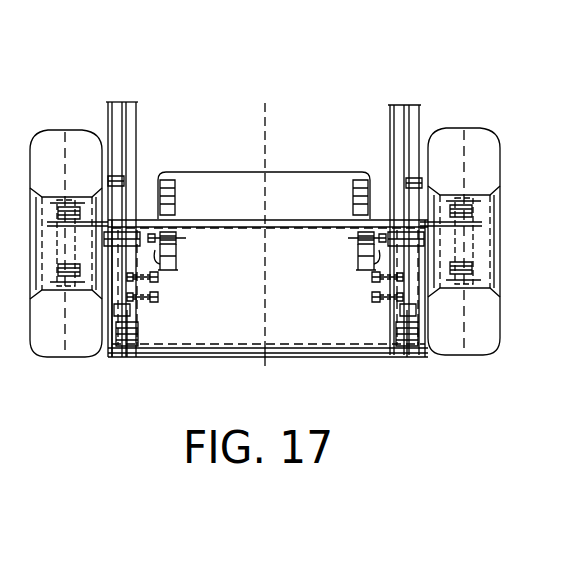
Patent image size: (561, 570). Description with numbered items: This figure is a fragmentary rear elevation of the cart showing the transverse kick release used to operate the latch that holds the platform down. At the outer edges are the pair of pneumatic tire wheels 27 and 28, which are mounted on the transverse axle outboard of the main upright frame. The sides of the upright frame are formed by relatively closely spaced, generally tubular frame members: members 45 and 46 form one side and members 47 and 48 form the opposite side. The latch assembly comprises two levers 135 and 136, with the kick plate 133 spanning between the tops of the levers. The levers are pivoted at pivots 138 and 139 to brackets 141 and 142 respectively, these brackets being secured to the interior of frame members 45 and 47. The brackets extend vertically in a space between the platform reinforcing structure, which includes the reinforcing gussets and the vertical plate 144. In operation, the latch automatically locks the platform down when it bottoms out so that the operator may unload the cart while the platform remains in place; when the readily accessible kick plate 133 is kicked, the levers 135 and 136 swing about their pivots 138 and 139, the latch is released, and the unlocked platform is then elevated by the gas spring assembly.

The pneumatic tire wheel 27 is at (50, 357).
The pneumatic tire wheel 28 is at (477, 355).
The tubular frame member 45 is at (431, 194).
The tubular frame member 46 is at (406, 104).
The tubular frame member 47 is at (151, 194).
The tubular frame member 48 is at (122, 101).
The kick plate 133 is at (318, 170).
The lever 135 is at (172, 258).
The lever 136 is at (352, 260).
The pivot 138 is at (178, 232).
The pivot 139 is at (356, 240).
The bracket 141 is at (145, 302).
The bracket 142 is at (385, 308).
The vertical plate 144 is at (250, 340).